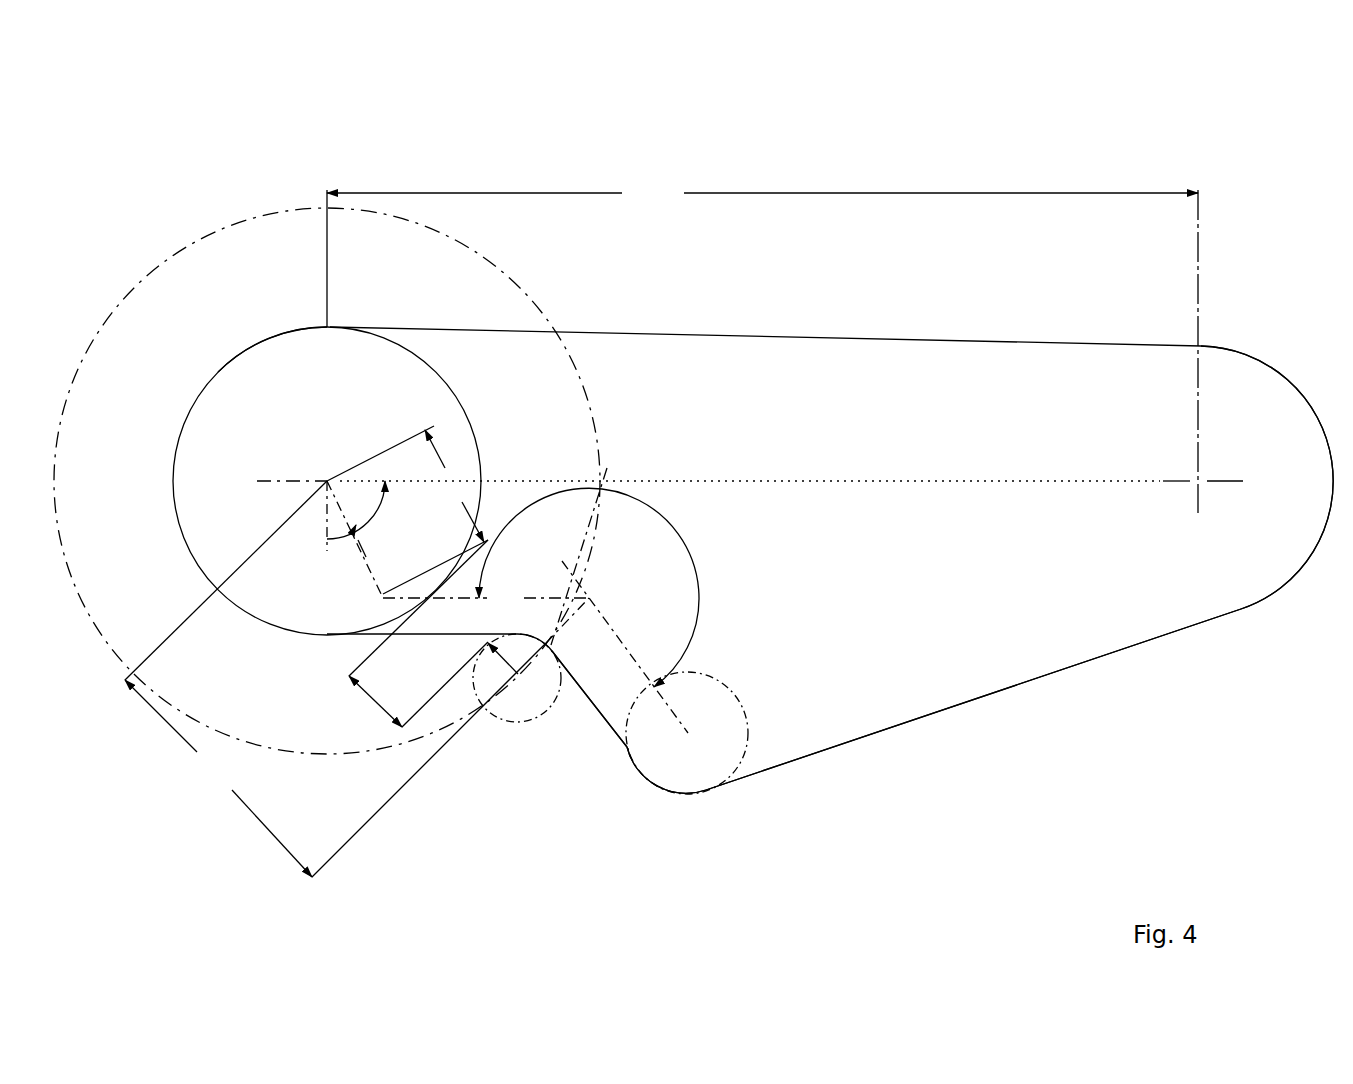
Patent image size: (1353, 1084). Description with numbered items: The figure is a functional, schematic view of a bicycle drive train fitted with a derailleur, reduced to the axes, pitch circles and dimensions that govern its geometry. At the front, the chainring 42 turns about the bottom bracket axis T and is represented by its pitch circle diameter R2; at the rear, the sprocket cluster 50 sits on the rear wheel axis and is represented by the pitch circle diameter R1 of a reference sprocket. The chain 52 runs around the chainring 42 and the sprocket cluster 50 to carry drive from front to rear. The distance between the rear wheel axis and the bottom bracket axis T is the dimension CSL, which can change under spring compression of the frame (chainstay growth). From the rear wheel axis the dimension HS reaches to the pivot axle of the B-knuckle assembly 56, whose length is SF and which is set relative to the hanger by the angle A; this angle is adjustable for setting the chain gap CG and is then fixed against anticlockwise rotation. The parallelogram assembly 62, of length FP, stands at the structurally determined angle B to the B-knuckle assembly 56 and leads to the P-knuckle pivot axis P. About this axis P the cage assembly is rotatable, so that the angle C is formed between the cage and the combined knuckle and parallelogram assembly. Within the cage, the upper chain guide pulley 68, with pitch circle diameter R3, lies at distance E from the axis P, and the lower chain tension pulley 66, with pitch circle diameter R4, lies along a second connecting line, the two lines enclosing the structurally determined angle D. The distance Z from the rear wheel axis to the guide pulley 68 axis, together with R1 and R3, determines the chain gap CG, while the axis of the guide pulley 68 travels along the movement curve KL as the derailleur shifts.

The front chainring 42 is at (1296, 386).
The sprocket cluster 50 is at (200, 415).
The chain 52 is at (1080, 664).
The B-knuckle assembly 56 is at (373, 569).
The parallelogram assembly 62 is at (540, 596).
The chain tension pulley 66 is at (680, 758).
The chain guide pulley 68 is at (548, 698).
The movement curve KL is at (293, 203).
The chainstay length dimension CSL is at (762, 254).
The pitch circle diameter of reference sprocket R1 is at (269, 331).
The pitch circle diameter of chainring R2 is at (1268, 361).
The pitch circle diameter of chain guide pulley R3 is at (517, 723).
The pitch circle diameter of chain tension pulley R4 is at (734, 688).
The bottom bracket axis T is at (1200, 482).
The dimension HS is at (326, 480).
The dimension SF is at (454, 486).
The angle A is at (386, 489).
The angle B is at (367, 543).
The angle C is at (589, 587).
The angle D is at (629, 656).
The dimension E is at (564, 574).
The P-knuckle pivot axis P is at (591, 600).
The dimension FP is at (502, 598).
The dimension Z is at (335, 679).
The chain gap CG is at (412, 634).